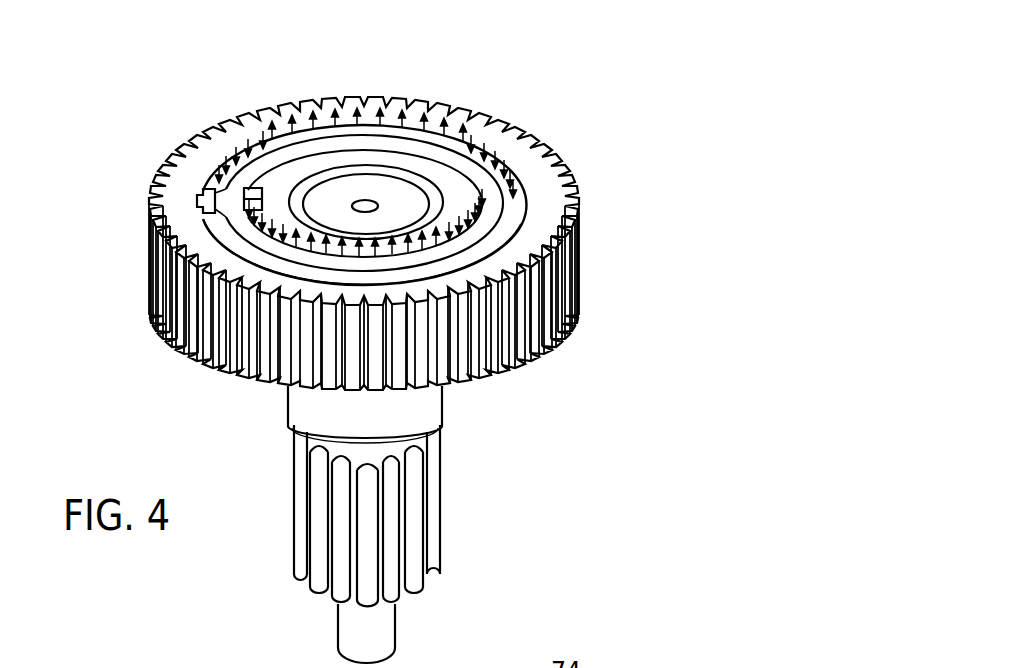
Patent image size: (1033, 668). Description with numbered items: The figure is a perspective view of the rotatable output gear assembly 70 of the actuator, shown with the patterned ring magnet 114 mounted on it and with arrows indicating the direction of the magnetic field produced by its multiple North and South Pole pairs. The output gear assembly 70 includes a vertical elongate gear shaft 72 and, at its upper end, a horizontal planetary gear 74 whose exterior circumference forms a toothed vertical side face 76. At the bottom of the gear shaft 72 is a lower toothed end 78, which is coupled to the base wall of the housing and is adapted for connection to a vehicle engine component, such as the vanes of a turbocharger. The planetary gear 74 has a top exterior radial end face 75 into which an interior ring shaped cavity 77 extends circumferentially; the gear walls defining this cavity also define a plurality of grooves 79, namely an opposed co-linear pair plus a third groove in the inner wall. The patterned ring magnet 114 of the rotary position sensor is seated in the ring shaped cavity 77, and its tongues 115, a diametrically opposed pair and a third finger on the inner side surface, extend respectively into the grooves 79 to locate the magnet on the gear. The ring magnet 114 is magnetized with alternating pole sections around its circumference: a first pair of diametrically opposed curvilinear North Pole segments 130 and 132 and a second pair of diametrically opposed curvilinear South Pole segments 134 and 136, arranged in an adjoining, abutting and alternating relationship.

The output gear assembly 70 is at (499, 97).
The gear shaft 72 is at (358, 630).
The planetary gear 74 is at (567, 222).
The top exterior radial end face 75 is at (364, 352).
The toothed vertical side face 76 is at (567, 290).
The ring shaped cavity 77 is at (520, 213).
The lower toothed end 78 is at (418, 523).
The grooves 79 is at (272, 185).
The patterned ring magnet 114 is at (475, 257).
The tongues 115 is at (205, 188).
The North Pole segment 130 is at (367, 132).
The North Pole segment 132 is at (383, 263).
The South Pole segment 134 is at (522, 208).
The South Pole segment 136 is at (235, 228).